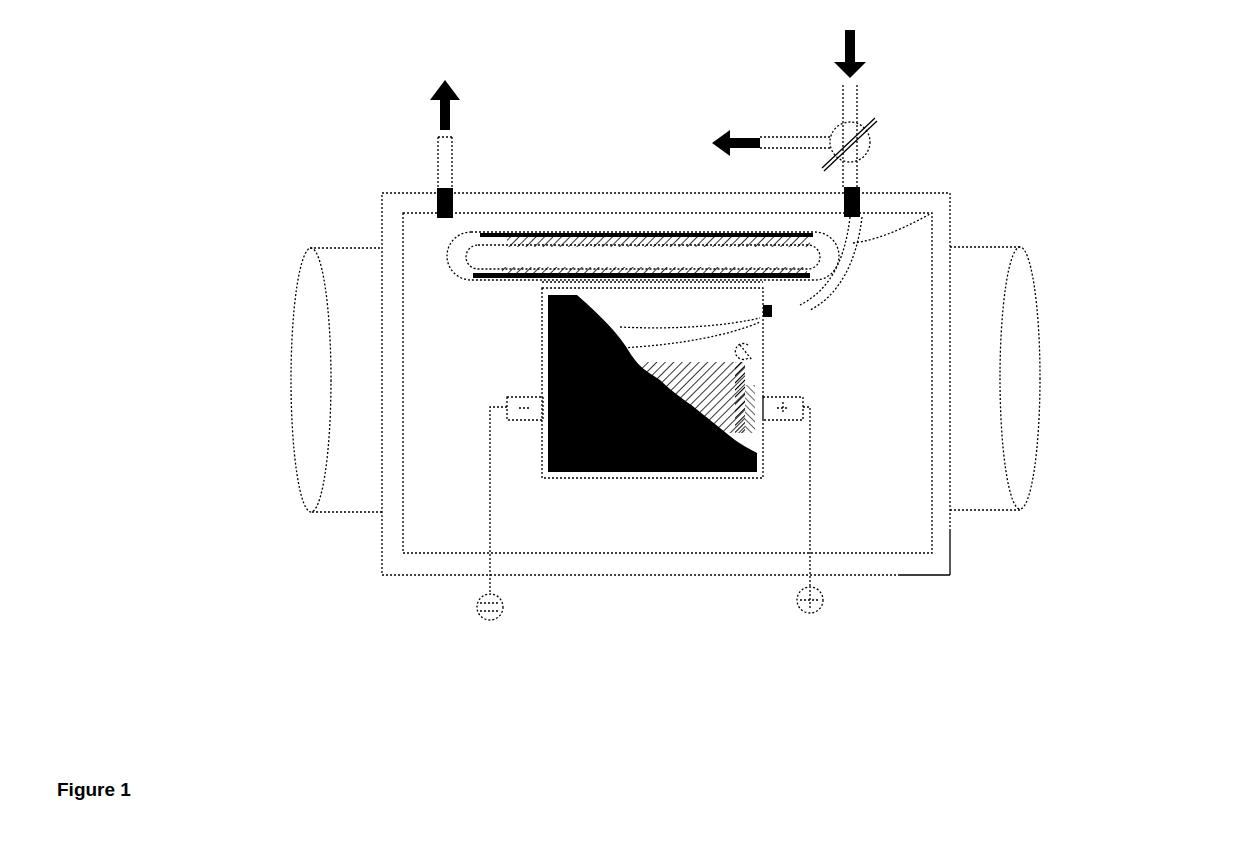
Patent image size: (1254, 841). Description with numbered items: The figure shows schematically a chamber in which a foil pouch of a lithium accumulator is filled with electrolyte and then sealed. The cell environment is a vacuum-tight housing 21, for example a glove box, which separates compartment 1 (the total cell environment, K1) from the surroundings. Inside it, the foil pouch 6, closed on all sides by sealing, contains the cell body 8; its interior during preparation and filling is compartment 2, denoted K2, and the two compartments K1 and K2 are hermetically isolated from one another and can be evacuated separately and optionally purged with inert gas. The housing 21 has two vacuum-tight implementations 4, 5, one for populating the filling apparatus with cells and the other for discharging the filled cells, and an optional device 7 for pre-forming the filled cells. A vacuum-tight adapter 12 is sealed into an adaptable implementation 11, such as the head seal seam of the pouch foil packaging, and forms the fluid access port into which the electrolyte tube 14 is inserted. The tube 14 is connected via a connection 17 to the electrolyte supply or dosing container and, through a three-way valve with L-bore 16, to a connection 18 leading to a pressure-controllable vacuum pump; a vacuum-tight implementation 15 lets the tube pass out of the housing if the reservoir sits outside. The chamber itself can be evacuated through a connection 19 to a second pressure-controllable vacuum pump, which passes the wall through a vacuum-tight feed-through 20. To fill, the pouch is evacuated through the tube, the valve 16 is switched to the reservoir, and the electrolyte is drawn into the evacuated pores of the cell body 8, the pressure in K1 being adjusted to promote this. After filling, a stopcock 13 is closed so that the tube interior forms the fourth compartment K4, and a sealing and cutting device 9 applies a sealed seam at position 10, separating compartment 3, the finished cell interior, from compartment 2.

The compartment 1 is at (440, 517).
The compartment 2 is at (750, 305).
The compartment 3 is at (765, 373).
The vacuum-tight implementation for populating the filling apparatus 4 is at (977, 363).
The vacuum-tight implementation for discharging filled cells 5 is at (350, 372).
The foil pouch 6 is at (673, 478).
The device for pre-forming filled cells 7 is at (810, 405).
The cell body 8 is at (765, 387).
The sealing station 9 is at (660, 323).
The seal seam 10 is at (715, 325).
The adaptable implementation 11 is at (760, 300).
The vacuum-tight adapter 12 is at (775, 320).
The stopcock 13 is at (775, 315).
The electrolyte tube 14 is at (853, 243).
The vacuum-tight feedthrough 15 is at (862, 214).
The three-way valve 16 is at (872, 158).
The connection to electrolyte supply 17 is at (838, 77).
The connection to vacuum pump I 18 is at (712, 140).
The connection to vacuum pump II 19 is at (440, 84).
The vacuum-tight feed-through 20 is at (438, 190).
The vacuum-tight housing 21 is at (915, 560).
The gas-tight sealable chamber K1 is at (667, 383).
The cell interior compartment K2 is at (758, 311).
The tube interior compartment K4 is at (951, 196).